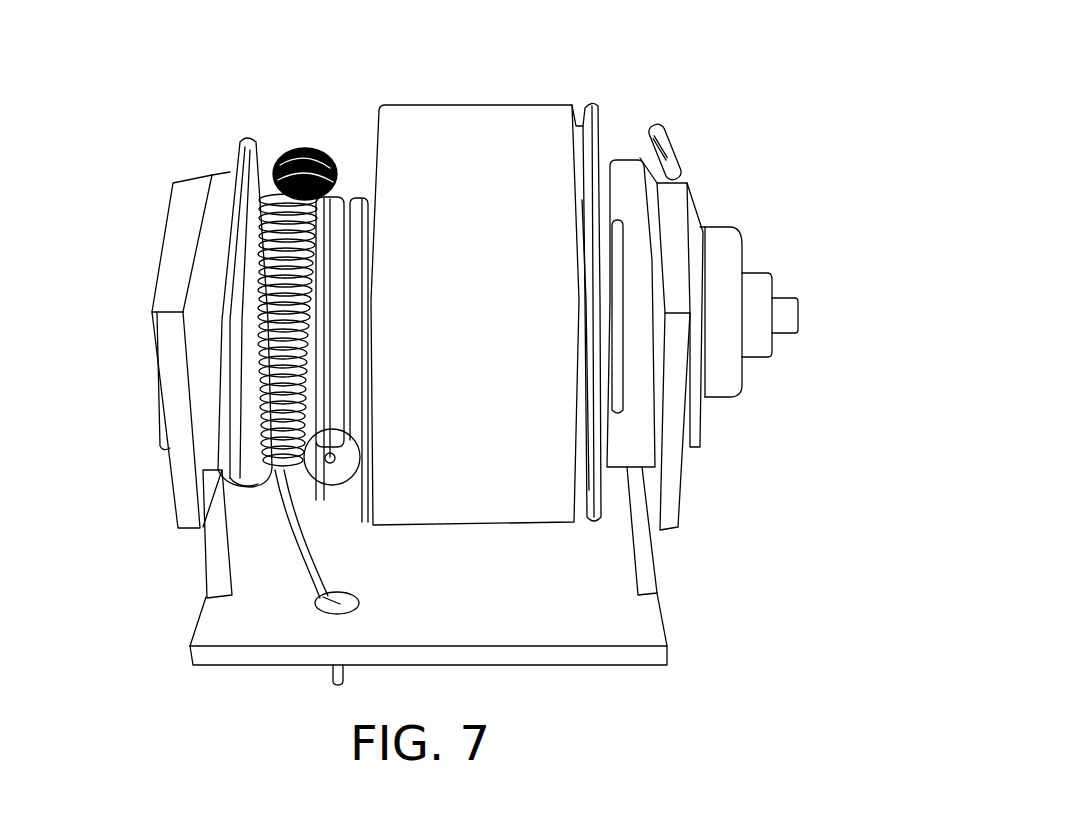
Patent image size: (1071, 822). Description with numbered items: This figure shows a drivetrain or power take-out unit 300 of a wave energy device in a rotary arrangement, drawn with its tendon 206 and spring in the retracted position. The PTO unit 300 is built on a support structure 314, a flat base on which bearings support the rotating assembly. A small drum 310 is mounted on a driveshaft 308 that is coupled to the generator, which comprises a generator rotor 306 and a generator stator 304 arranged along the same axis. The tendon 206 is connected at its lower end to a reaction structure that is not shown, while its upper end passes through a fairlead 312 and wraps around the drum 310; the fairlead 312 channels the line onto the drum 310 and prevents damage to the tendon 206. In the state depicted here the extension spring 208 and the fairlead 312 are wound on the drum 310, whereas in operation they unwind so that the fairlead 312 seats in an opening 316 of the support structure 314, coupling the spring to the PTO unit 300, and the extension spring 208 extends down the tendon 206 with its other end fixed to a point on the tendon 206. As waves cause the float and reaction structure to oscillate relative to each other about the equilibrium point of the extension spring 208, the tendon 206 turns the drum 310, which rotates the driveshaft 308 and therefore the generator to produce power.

The PTO unit 300 is at (232, 92).
The tendon 206 is at (360, 178).
The extension spring 208 is at (293, 132).
The generator stator 304 is at (628, 195).
The generator rotor 306 is at (494, 118).
The driveshaft 308 is at (800, 310).
The drum 310 is at (236, 150).
The fairlead 312 is at (343, 472).
The support structure 314 is at (212, 612).
The opening 316 is at (325, 600).